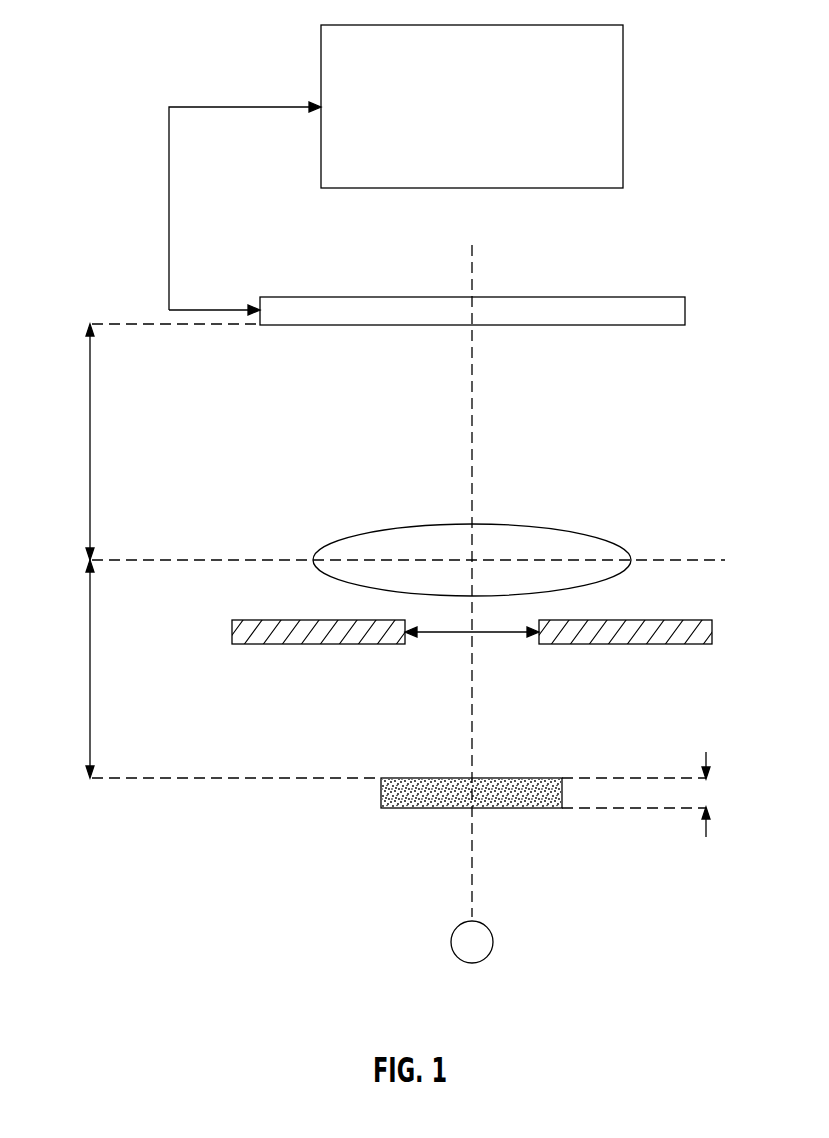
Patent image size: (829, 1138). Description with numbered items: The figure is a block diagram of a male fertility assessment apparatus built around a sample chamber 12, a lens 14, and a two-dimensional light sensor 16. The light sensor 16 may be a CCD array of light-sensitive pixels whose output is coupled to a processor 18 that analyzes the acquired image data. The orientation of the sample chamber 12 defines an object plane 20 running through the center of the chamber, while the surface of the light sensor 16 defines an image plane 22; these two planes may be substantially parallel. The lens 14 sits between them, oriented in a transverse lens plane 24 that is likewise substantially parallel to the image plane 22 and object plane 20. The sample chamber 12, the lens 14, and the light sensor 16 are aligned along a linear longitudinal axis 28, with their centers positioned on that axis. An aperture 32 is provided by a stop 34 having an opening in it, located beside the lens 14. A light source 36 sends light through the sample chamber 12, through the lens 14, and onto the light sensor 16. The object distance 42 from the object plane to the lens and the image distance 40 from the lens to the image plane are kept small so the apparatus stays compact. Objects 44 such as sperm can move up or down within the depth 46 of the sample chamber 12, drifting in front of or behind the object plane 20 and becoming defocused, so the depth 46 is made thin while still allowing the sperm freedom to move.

The sample chamber 12 is at (410, 808).
The lens 14 is at (532, 525).
The two-dimensional light sensor 16 is at (656, 297).
The processor 18 is at (590, 25).
The object plane 20 is at (226, 780).
The image plane 22 is at (178, 326).
The transverse lens plane 24 is at (705, 560).
The linear longitudinal axis 28 is at (472, 408).
The aperture 32 is at (488, 633).
The stop 34 is at (258, 620).
The light source 36 is at (493, 942).
The image distance 40 is at (90, 430).
The object distance 42 is at (90, 632).
The objects 44 is at (518, 798).
The depth 46 is at (707, 760).